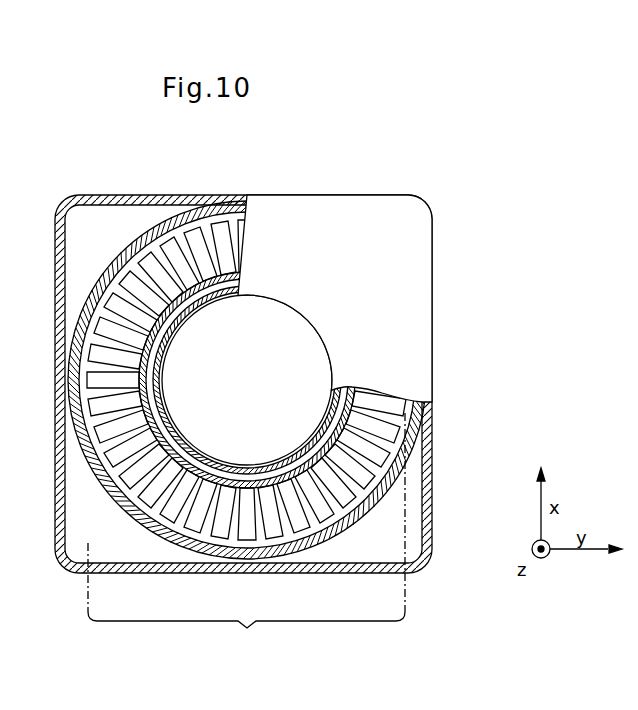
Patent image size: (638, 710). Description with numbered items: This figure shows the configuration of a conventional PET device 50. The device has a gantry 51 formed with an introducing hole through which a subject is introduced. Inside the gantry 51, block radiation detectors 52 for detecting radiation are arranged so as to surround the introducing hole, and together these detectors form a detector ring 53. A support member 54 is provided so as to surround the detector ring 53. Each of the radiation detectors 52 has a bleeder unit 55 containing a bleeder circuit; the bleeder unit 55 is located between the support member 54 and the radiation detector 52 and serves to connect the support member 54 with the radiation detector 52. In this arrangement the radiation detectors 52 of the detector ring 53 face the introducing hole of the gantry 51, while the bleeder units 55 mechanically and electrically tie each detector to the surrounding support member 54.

The PET device 50 is at (341, 188).
The gantry 51 is at (371, 303).
The block radiation detector 52 is at (231, 471).
The detector ring 53 is at (246, 533).
The support member 54 is at (131, 518).
The bleeder unit 55 is at (343, 524).